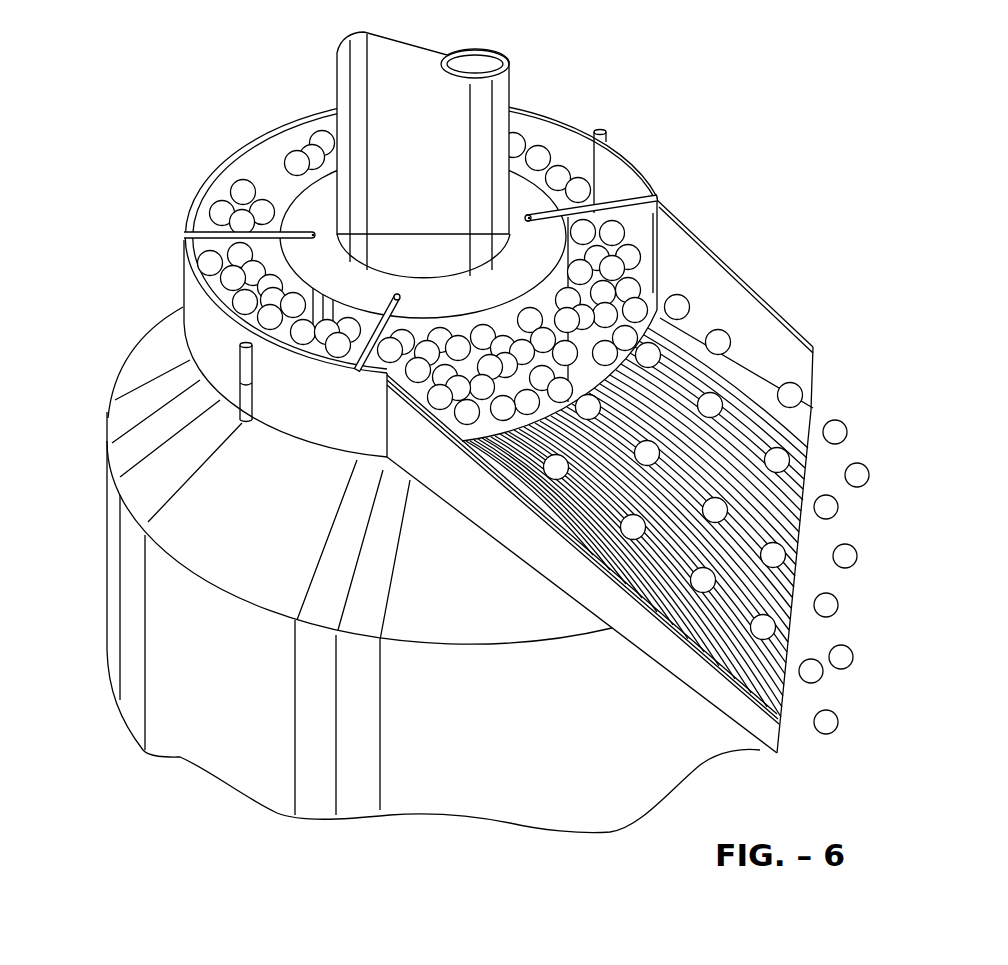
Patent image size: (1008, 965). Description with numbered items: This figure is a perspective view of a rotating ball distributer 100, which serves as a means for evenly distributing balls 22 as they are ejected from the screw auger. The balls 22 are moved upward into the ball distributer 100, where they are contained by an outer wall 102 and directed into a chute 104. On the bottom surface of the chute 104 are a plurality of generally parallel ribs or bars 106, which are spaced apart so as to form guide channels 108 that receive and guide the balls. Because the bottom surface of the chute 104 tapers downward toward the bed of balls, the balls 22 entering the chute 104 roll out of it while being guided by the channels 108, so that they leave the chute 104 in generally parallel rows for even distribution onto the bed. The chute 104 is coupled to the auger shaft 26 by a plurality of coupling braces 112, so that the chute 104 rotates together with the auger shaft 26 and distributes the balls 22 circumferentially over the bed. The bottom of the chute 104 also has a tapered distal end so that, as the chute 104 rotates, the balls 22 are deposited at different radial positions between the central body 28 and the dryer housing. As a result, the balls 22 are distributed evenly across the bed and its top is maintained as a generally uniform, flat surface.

The rotating ball distributer 100 is at (203, 122).
The balls 22 is at (472, 228).
The auger shaft 26 is at (308, 203).
The coupling braces 112 is at (187, 233).
The outer wall 102 is at (187, 313).
The chute 104 is at (768, 346).
The ribs or bars 106 is at (798, 588).
The guide channels 108 is at (803, 537).
The central body 28 is at (232, 766).